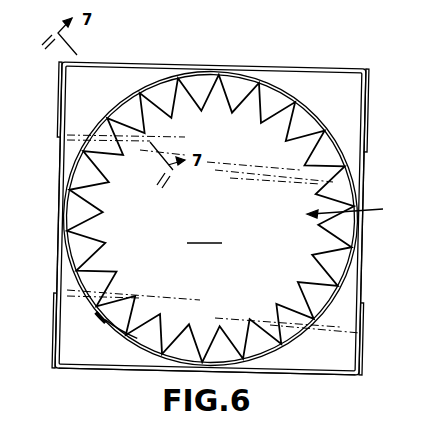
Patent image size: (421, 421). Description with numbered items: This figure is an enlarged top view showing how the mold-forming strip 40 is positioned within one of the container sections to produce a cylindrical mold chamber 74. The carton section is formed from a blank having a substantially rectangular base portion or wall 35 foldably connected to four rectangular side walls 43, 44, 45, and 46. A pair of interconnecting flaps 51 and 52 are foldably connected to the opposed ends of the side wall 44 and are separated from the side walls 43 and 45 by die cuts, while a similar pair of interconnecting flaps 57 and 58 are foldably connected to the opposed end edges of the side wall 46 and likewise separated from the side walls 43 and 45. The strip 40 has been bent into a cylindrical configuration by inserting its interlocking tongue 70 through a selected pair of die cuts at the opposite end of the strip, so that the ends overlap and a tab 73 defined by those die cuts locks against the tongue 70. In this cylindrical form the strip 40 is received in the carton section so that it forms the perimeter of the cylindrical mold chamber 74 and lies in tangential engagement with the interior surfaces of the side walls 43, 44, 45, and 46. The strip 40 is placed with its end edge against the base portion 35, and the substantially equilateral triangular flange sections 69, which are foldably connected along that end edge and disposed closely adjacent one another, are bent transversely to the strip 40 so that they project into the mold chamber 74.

The base portion or wall 35 is at (204, 235).
The mold-forming strip 40 is at (306, 93).
The side wall 43 is at (61, 171).
The side wall 44 is at (197, 64).
The side wall 45 is at (367, 169).
The side wall 46 is at (295, 374).
The interconnecting flap 51 is at (60, 104).
The interconnecting flap 52 is at (371, 90).
The interconnecting flap 57 is at (55, 347).
The interconnecting flap 58 is at (363, 328).
The triangular flange section 69 is at (338, 262).
The interlocking tongue 70 is at (125, 342).
The tab 73 is at (97, 325).
The cylindrical mold chamber 74 is at (354, 208).